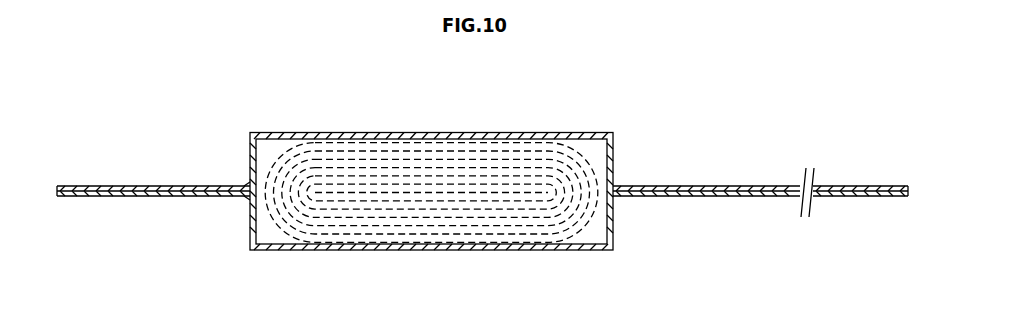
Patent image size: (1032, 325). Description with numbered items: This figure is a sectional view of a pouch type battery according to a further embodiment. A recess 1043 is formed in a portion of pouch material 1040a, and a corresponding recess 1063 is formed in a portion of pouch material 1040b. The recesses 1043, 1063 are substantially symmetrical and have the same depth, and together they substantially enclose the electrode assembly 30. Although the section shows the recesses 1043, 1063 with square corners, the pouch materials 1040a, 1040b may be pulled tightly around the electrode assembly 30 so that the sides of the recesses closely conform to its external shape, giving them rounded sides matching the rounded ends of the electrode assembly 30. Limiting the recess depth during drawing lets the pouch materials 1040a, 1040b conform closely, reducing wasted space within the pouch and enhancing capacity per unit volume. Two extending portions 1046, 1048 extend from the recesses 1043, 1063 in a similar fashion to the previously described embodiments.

The recess 1043 is at (249, 160).
The pouch material 1040a is at (431, 132).
The pouch material 1040b is at (430, 250).
The electrode assembly 30 is at (513, 148).
The extending portion 1046 is at (105, 197).
The extending portion 1048 is at (715, 197).
The recess 1063 is at (250, 217).